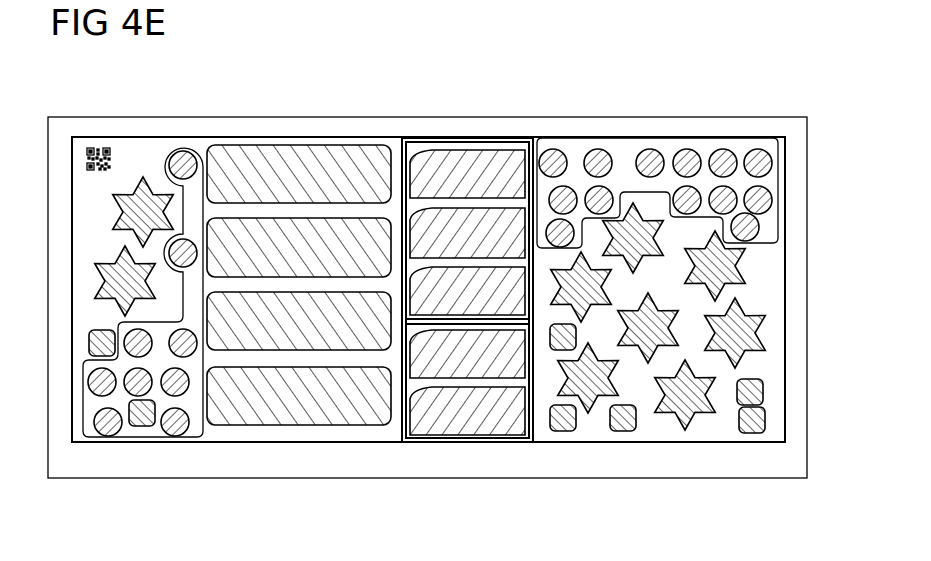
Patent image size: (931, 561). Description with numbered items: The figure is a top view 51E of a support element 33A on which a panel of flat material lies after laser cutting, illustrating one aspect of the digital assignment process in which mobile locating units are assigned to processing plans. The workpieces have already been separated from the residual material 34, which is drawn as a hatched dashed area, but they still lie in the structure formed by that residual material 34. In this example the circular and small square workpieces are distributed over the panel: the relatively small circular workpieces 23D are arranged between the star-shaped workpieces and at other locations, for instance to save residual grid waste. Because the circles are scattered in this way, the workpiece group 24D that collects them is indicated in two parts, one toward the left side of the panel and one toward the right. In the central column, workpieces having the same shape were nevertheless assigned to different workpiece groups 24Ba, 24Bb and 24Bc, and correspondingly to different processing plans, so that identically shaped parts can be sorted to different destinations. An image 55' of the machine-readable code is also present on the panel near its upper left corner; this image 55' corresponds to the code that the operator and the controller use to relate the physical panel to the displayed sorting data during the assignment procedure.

The image of the machine-readable code 55' is at (104, 126).
The workpiece group 24D is at (192, 130).
The workpiece group 24Bb is at (399, 200).
The workpiece group 24Bc is at (480, 125).
The workpiece group 24Ba is at (550, 434).
The circular workpieces 23D is at (185, 446).
The residual material 34 is at (778, 401).
The support element 33A is at (755, 480).
The top view 51E is at (618, 80).